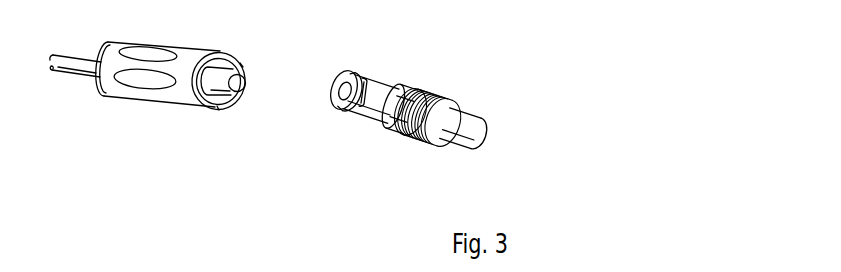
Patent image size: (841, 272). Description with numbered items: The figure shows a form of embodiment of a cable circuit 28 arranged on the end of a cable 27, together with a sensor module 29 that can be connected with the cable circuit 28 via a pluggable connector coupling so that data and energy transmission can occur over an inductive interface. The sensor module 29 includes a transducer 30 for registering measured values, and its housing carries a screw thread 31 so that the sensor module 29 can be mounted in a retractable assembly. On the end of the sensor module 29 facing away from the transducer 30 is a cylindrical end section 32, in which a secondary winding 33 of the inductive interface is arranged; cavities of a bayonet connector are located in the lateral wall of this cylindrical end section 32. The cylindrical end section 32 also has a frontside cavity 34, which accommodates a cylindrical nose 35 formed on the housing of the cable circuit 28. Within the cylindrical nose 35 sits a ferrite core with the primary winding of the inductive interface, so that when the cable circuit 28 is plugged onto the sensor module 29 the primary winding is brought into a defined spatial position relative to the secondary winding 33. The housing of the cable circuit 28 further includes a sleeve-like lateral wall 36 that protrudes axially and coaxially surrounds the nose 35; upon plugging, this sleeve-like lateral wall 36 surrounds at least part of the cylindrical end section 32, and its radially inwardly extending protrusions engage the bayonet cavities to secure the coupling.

The cable 27 is at (84, 69).
The cable circuit 28 is at (164, 120).
The sensor module 29 is at (391, 108).
The transducer 30 is at (462, 124).
The screw thread 31 is at (429, 92).
The cylindrical end section 32 is at (379, 87).
The secondary winding 33 is at (333, 80).
The frontside cavity 34 is at (346, 76).
The cylindrical nose 35 is at (224, 73).
The sleeve-like lateral wall 36 is at (236, 70).